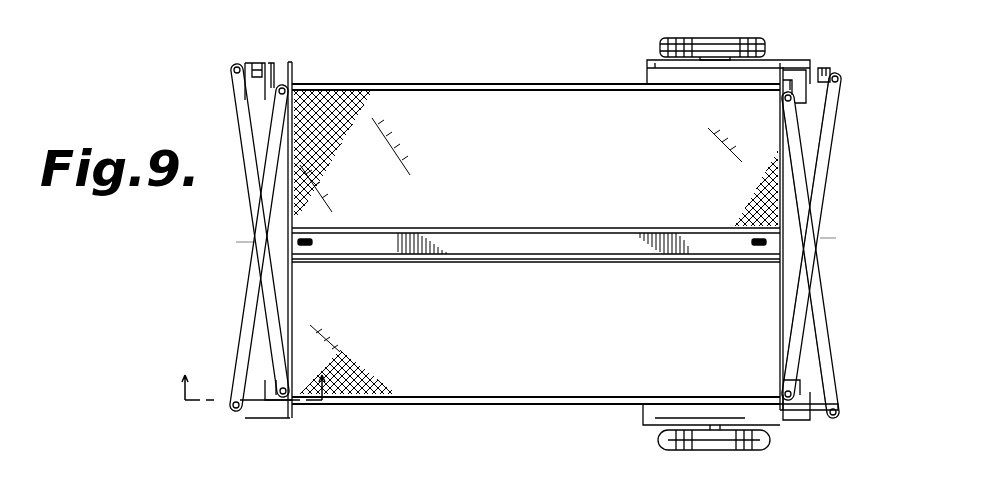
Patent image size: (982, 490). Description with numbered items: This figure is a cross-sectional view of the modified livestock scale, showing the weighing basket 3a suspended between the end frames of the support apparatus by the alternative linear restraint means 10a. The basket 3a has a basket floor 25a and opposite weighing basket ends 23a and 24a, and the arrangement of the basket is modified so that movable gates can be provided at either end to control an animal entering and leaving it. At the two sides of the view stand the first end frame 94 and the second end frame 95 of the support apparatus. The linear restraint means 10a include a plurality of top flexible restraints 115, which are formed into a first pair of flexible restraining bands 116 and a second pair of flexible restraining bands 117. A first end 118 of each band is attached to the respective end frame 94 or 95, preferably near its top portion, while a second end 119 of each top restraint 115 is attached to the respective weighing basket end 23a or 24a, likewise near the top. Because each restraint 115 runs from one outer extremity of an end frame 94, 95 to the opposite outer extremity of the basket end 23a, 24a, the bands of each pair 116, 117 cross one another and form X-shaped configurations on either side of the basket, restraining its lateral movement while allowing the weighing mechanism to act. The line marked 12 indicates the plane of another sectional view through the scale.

The weighing basket 3a is at (483, 74).
The basket floor 25a is at (368, 128).
The weighing basket end 24a is at (290, 280).
The weighing basket end 23a is at (782, 284).
The linear restraint means 10a is at (838, 176).
The top flexible restraints 115 is at (260, 214).
The first pair of flexible restraining bands 116 is at (838, 243).
The second pair of flexible restraining bands 117 is at (230, 252).
The first end 118 is at (234, 91).
The second end 119 is at (284, 385).
The second end frame 95 is at (256, 66).
The first end frame 94 is at (820, 70).
The section line 12- 12 is at (259, 404).